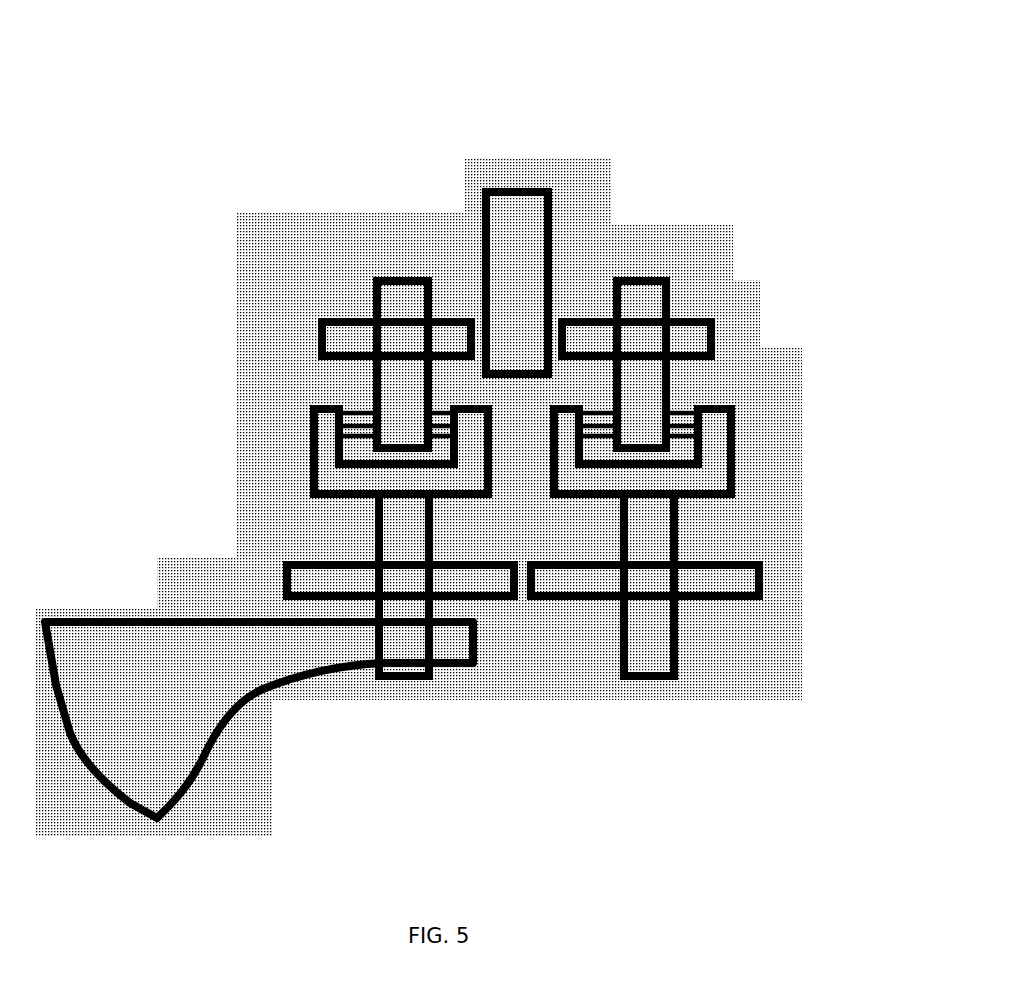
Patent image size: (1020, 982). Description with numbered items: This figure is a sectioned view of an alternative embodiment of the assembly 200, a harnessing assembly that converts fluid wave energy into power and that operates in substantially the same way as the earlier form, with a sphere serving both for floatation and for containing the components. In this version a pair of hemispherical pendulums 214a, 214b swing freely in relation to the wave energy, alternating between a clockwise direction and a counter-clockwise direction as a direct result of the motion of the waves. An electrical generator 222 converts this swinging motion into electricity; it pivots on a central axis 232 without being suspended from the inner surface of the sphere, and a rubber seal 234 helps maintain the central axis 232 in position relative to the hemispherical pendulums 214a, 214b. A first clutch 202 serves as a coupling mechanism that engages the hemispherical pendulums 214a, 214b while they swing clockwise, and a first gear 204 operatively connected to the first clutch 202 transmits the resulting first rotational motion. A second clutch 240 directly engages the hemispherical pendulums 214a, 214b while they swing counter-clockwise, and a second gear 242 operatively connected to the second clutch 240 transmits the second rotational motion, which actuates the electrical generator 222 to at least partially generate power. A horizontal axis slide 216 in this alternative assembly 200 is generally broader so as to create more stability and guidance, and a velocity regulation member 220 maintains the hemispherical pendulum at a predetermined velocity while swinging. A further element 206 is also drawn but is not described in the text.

The assembly 200 is at (170, 82).
The first clutch 202 is at (325, 427).
The first gear 204 is at (337, 338).
The second conductive line 206 is at (652, 655).
The hemispherical pendulum 214a is at (390, 297).
The hemispherical pendulum 214b is at (642, 305).
The horizontal axis slide 216 is at (152, 730).
The velocity regulation member 220 is at (737, 585).
The electrical generator 222 is at (517, 240).
The central axis 232 is at (400, 527).
The rubber seal 234 is at (310, 580).
The second clutch 240 is at (712, 427).
The second gear 242 is at (693, 340).